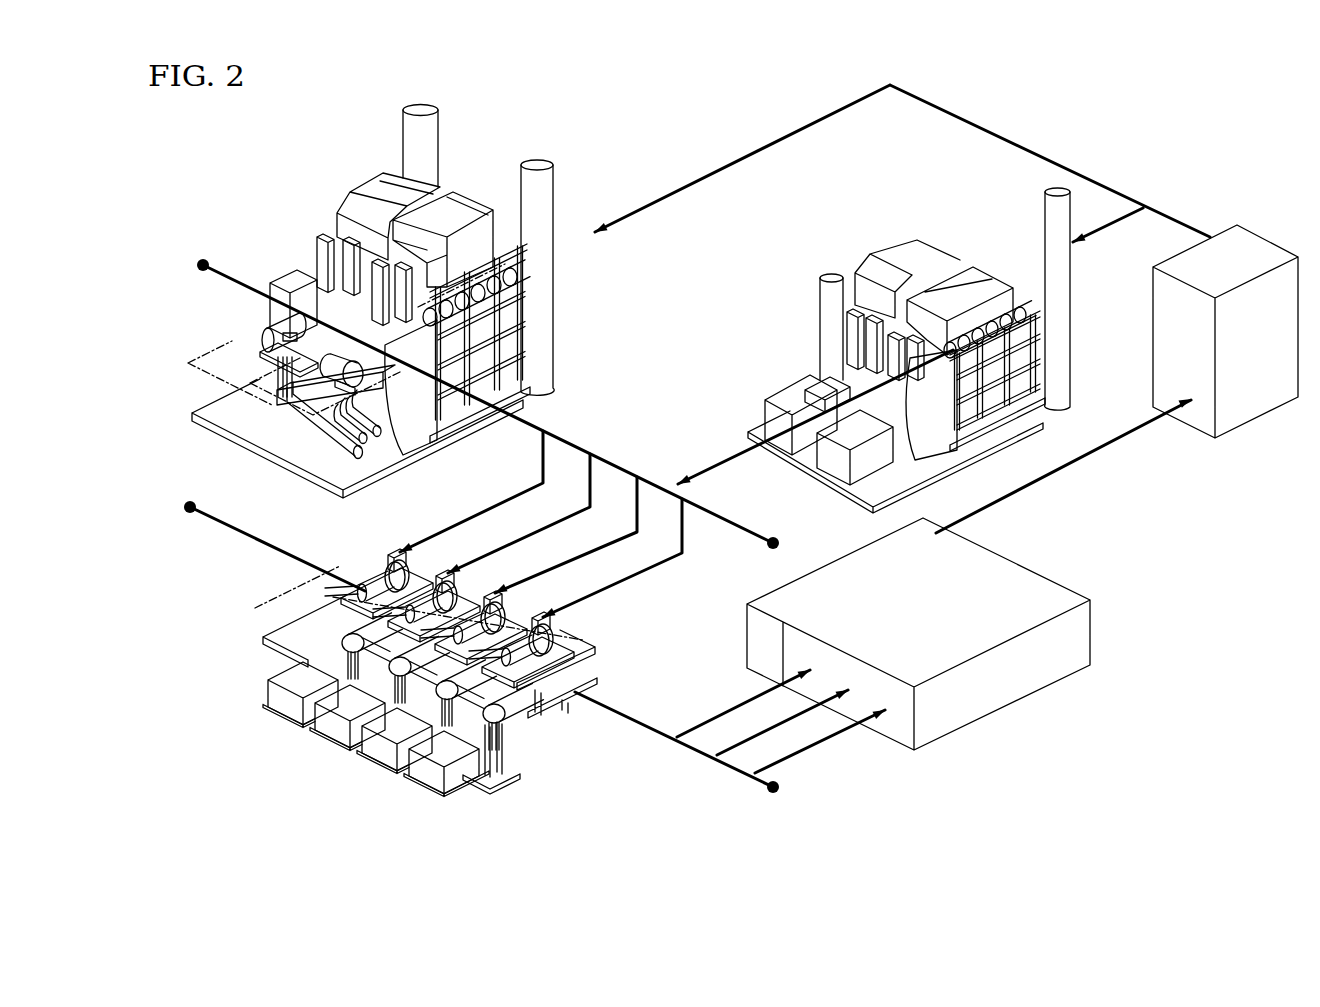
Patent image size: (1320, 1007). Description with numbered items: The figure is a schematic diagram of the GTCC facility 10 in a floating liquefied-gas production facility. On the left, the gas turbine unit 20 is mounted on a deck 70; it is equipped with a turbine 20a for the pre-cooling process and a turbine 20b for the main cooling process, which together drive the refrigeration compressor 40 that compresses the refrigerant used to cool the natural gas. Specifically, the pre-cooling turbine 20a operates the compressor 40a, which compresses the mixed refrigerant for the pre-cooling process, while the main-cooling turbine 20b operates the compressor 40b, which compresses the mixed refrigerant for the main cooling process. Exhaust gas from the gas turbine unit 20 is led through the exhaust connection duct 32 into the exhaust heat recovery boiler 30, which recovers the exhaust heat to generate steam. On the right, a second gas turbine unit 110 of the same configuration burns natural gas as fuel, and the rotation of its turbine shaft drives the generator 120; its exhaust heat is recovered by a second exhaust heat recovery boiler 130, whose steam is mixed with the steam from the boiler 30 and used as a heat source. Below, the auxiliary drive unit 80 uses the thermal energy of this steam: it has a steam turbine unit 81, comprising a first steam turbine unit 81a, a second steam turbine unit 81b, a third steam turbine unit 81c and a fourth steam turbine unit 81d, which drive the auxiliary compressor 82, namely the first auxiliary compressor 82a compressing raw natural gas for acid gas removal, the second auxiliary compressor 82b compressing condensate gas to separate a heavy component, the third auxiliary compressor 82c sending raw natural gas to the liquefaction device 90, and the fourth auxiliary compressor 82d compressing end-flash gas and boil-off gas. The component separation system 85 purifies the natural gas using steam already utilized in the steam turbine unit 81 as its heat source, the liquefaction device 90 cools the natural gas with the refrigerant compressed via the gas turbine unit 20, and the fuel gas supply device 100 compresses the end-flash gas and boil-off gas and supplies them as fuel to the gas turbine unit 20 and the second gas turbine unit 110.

The GTCC facility 10 is at (1206, 78).
The gas turbine unit 20 is at (555, 80).
The turbine 20a is at (480, 190).
The turbine 20b is at (440, 168).
The exhaust heat recovery boiler 30 is at (273, 263).
The exhaust connection duct 32 is at (268, 310).
The refrigeration compressor 40 is at (249, 420).
The compressor 40a is at (320, 372).
The compressor 40b is at (273, 333).
The deck 70 is at (230, 445).
The auxiliary drive unit 80 is at (262, 776).
The steam turbine unit 81 is at (595, 645).
The first steam turbine unit 81a is at (413, 567).
The second steam turbine unit 81b is at (447, 587).
The third steam turbine unit 81c is at (497, 607).
The fourth steam turbine unit 81d is at (557, 638).
The auxiliary compressor 82 is at (375, 565).
The first auxiliary compressor 82a is at (360, 587).
The second auxiliary compressor 82b is at (383, 640).
The third auxiliary compressor 82c is at (463, 647).
The fourth auxiliary compressor 82d is at (520, 657).
The component separation system 85 is at (1043, 578).
The liquefaction device 90 is at (938, 530).
The fuel gas supply device 100 is at (1207, 427).
The second gas turbine unit 110 is at (952, 240).
The generator 120 is at (750, 412).
The second exhaust heat recovery boiler 130 is at (1083, 328).